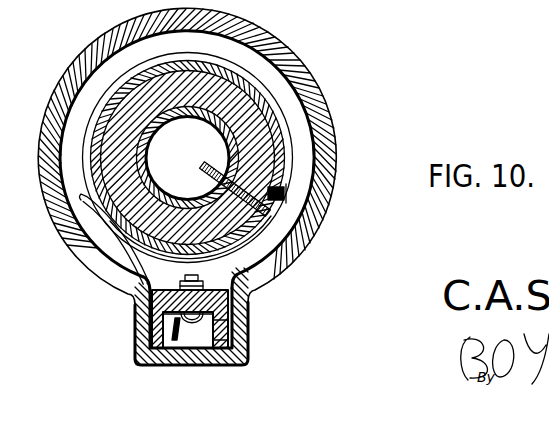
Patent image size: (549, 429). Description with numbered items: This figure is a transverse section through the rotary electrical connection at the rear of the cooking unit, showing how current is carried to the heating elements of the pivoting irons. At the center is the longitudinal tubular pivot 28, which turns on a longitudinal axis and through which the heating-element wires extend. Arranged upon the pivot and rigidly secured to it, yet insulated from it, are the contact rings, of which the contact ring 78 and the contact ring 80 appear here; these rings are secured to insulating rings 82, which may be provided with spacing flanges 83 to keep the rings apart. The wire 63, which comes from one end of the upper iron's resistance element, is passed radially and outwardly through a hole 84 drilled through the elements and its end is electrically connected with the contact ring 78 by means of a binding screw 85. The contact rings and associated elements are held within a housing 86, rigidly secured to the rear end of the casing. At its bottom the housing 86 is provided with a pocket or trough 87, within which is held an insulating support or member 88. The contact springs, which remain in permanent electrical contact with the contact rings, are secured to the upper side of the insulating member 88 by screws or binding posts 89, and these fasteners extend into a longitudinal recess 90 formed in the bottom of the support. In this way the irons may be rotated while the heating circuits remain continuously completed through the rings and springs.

The longitudinal tubular pivot 28 is at (155, 133).
The wire 63 is at (202, 166).
The contact ring 78 is at (267, 100).
The contact ring 80 is at (127, 236).
The insulating rings 82 is at (270, 135).
The spacing flanges 83 is at (290, 118).
The hole 84 is at (247, 227).
The binding screw 85 is at (286, 198).
The housing 86 is at (293, 62).
The pocket or trough 87 is at (230, 317).
The insulating support or member 88 is at (150, 311).
The screws or binding posts 89 is at (193, 325).
The longitudinal recess 90 is at (212, 330).